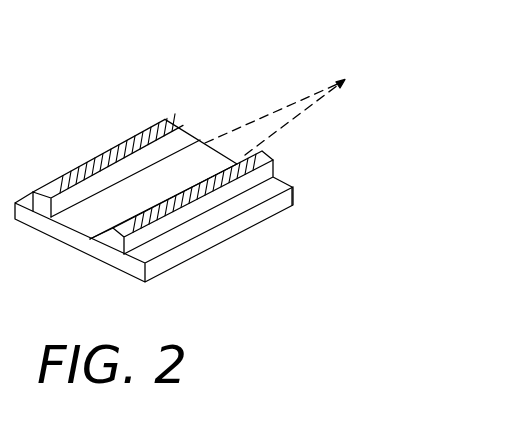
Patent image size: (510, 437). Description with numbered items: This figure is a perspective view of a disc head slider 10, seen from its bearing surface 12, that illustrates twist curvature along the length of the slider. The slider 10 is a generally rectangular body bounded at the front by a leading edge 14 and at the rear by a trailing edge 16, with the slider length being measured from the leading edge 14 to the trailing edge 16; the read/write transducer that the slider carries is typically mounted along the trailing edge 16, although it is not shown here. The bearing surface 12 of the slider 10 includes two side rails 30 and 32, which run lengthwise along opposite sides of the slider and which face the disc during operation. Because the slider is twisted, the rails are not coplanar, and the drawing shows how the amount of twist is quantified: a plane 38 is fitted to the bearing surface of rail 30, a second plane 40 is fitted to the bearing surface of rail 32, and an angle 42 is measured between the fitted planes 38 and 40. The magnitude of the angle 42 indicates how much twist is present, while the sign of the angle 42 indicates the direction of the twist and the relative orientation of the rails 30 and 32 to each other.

The disc head slider 10 is at (182, 153).
The bearing surface 12 is at (116, 145).
The leading edge 14 is at (166, 118).
The trailing edge 16 is at (67, 235).
The side rail 30 is at (53, 185).
The side rail 32 is at (155, 235).
The fitted plane 38 is at (153, 150).
The fitted plane 40 is at (208, 197).
The angle 42 is at (345, 148).